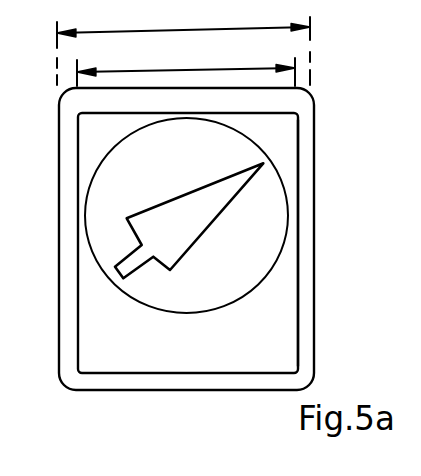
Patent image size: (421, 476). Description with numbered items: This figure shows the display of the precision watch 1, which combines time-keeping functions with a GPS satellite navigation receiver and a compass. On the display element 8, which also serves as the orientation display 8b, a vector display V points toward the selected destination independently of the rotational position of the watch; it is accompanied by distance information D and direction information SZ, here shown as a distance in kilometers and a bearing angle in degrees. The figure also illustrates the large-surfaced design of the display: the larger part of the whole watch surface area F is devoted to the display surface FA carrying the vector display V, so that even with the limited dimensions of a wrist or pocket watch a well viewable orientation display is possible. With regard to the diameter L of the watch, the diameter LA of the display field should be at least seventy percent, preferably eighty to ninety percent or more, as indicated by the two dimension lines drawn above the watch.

The precision watch 1 is at (212, 239).
The watch surface area F is at (318, 228).
The display element 8 is at (195, 243).
The orientation display 8b is at (298, 311).
The display surface FA is at (98, 322).
The vector display V is at (180, 193).
The diameter of the watch L is at (183, 42).
The diameter of the display field LA is at (186, 62).